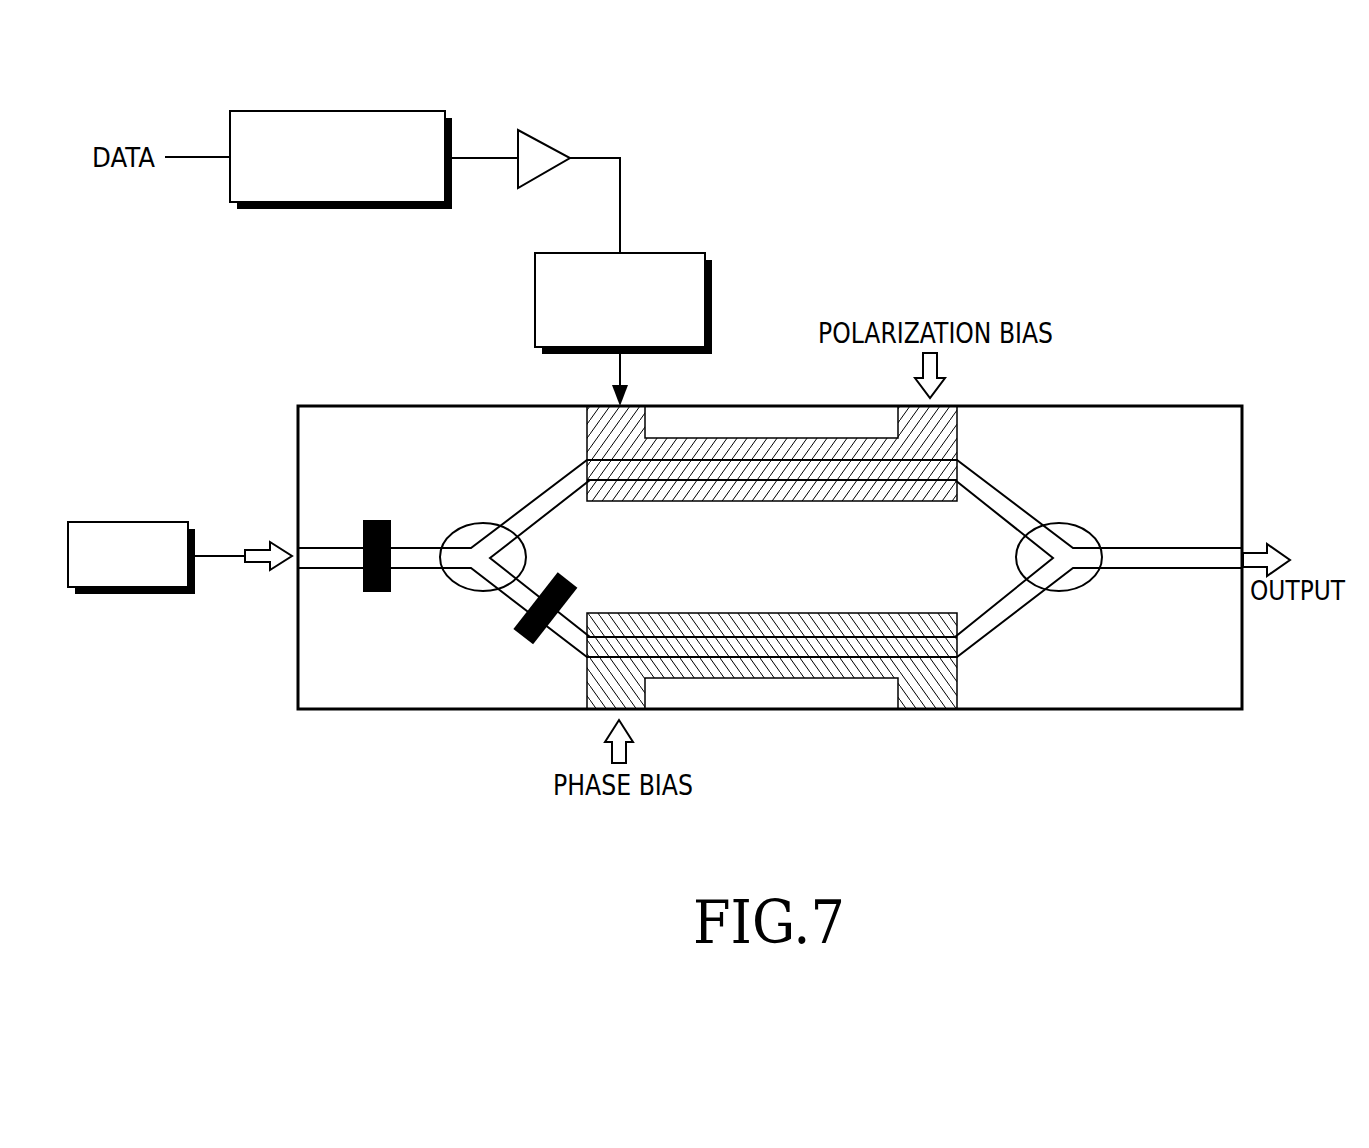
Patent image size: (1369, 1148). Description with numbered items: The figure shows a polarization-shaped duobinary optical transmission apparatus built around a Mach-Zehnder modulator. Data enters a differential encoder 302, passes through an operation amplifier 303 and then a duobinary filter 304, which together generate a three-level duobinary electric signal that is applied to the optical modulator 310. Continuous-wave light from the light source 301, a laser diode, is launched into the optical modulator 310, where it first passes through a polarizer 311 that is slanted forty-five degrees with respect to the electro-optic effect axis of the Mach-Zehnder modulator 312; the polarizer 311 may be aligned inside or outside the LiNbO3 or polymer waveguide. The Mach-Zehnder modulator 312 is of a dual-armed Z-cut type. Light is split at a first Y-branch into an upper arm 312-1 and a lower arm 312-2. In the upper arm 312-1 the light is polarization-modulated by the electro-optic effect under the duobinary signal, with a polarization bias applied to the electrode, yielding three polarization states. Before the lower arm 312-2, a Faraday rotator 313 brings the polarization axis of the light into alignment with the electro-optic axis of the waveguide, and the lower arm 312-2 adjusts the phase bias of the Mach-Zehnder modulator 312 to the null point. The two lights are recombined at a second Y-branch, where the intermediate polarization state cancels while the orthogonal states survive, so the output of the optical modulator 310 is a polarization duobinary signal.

The light source 301 is at (126, 522).
The differential encoder 302 is at (336, 111).
The operation amplifier 303 is at (541, 137).
The duobinary filter 304 is at (712, 307).
The optical modulator 310 is at (805, 557).
The polarizer 311 is at (376, 520).
The Mach-Zehnder modulator 312 is at (851, 557).
The upper arm 312-1 is at (680, 502).
The lower arm 312-2 is at (858, 613).
The Faraday rotator 313 is at (521, 634).